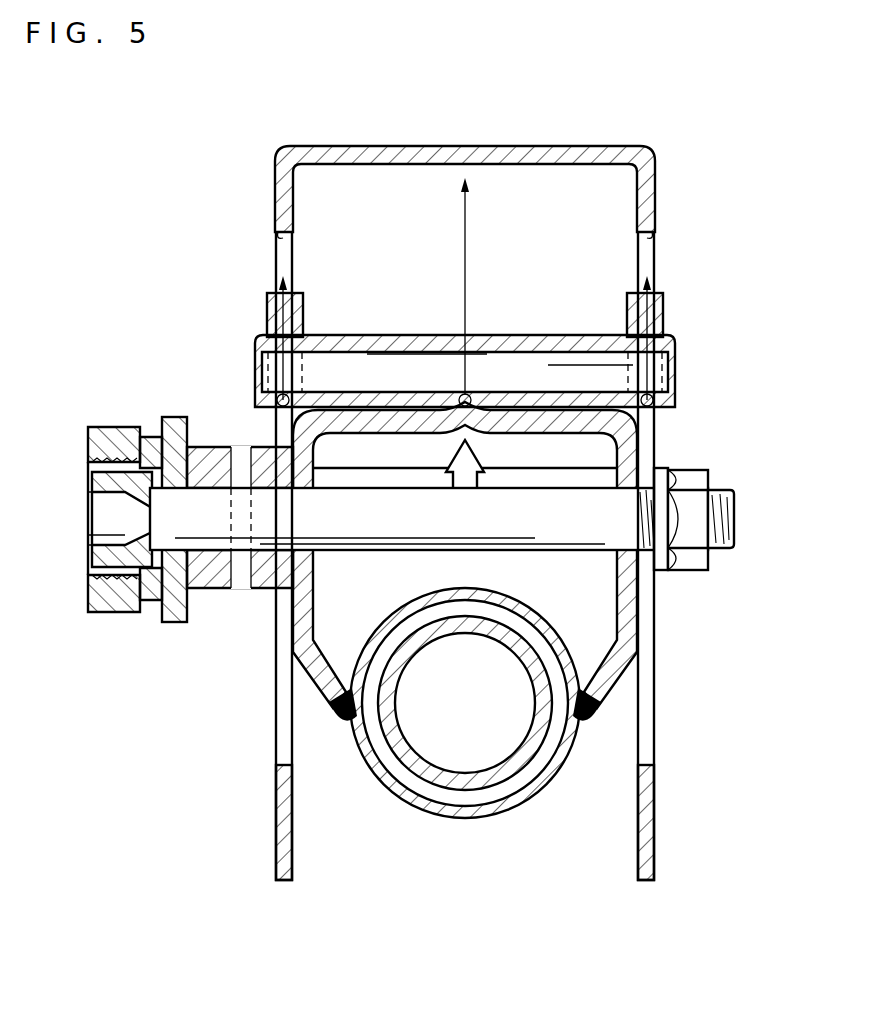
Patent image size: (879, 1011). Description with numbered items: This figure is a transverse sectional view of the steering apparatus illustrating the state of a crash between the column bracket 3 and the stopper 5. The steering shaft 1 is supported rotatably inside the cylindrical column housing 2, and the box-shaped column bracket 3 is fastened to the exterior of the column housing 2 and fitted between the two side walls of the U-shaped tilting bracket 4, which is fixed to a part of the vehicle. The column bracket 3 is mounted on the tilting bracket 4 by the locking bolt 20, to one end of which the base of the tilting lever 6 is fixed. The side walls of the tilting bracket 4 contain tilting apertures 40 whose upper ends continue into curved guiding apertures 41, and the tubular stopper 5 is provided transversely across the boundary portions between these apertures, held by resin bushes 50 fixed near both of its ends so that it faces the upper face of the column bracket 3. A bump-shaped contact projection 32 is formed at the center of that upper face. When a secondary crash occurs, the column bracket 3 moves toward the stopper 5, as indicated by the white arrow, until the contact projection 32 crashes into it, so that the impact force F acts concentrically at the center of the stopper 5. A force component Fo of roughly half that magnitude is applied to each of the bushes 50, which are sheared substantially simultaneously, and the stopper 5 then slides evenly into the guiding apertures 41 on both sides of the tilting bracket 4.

The steering shaft 1 is at (508, 765).
The column housing 2 is at (412, 803).
The column bracket 3 is at (634, 608).
The tilting bracket 4 is at (528, 147).
The stopper 5 is at (492, 338).
The tilting lever 6 is at (204, 589).
The locking bolt 20 is at (578, 492).
The contact projection 32 is at (428, 393).
The tilting aperture 40 is at (285, 763).
The guiding aperture 41 is at (280, 235).
The bush 50 is at (267, 312).
The impact force F is at (475, 286).
The force component Fo is at (710, 262).